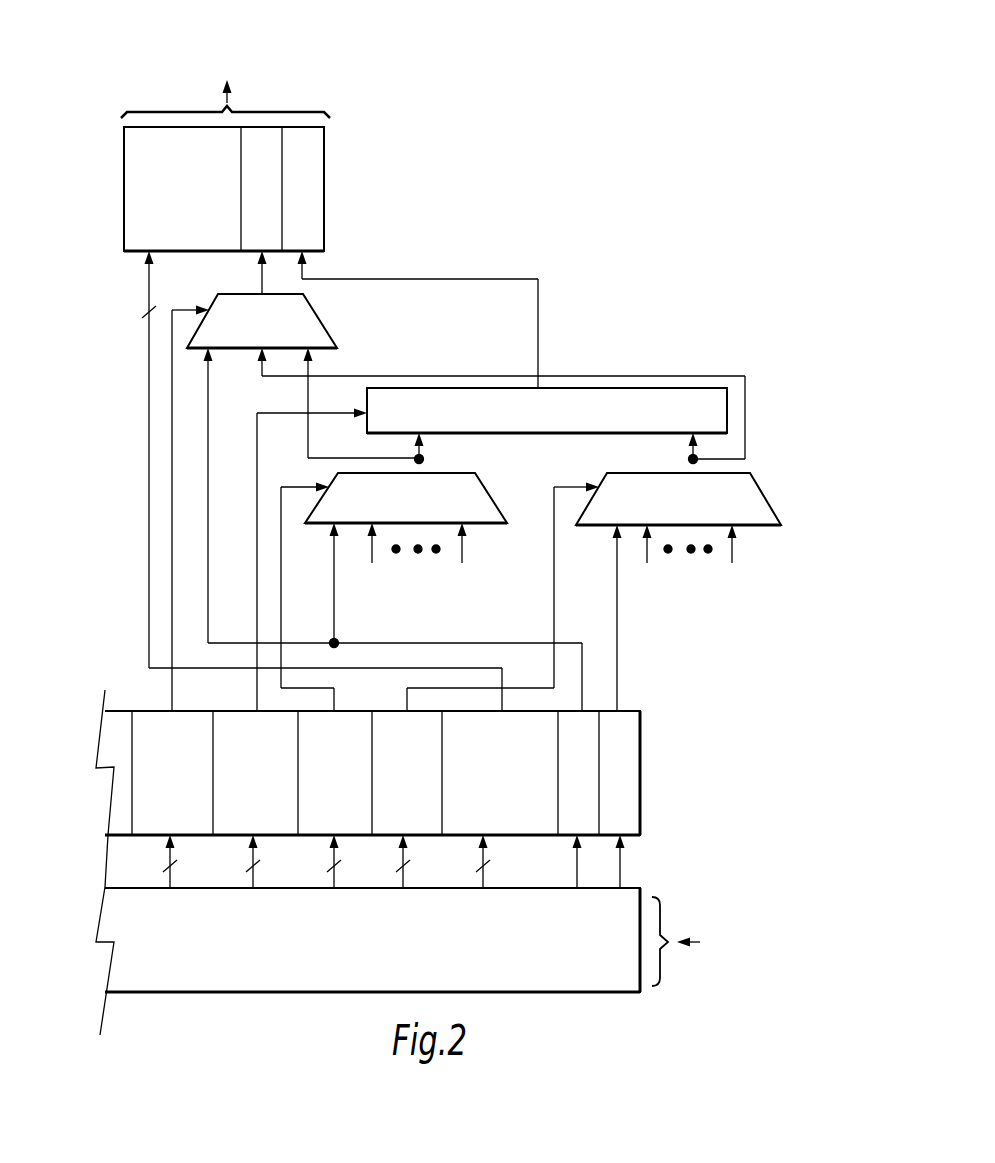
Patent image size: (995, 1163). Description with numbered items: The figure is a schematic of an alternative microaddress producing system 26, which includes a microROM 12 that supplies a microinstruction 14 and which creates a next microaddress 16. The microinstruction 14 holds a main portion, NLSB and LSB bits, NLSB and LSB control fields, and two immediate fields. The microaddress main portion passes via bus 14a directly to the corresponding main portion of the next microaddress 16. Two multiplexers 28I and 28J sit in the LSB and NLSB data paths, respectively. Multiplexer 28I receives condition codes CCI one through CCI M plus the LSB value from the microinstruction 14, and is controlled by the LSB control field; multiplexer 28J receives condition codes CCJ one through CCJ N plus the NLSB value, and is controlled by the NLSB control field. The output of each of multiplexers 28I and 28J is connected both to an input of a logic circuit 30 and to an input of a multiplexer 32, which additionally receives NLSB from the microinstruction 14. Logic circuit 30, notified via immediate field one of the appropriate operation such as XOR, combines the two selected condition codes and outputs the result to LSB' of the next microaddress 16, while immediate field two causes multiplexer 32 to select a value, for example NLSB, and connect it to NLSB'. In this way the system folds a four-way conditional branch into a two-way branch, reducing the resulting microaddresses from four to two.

The microROM 12 is at (190, 953).
The microinstruction 14 is at (660, 774).
The bus 14a is at (148, 512).
The next microaddress 16 is at (100, 211).
The microaddress producing system 26 is at (595, 205).
The multiplexer 28I is at (708, 517).
The multiplexer 28J is at (438, 517).
The logic circuit 30 is at (670, 428).
The multiplexer 32 is at (271, 342).